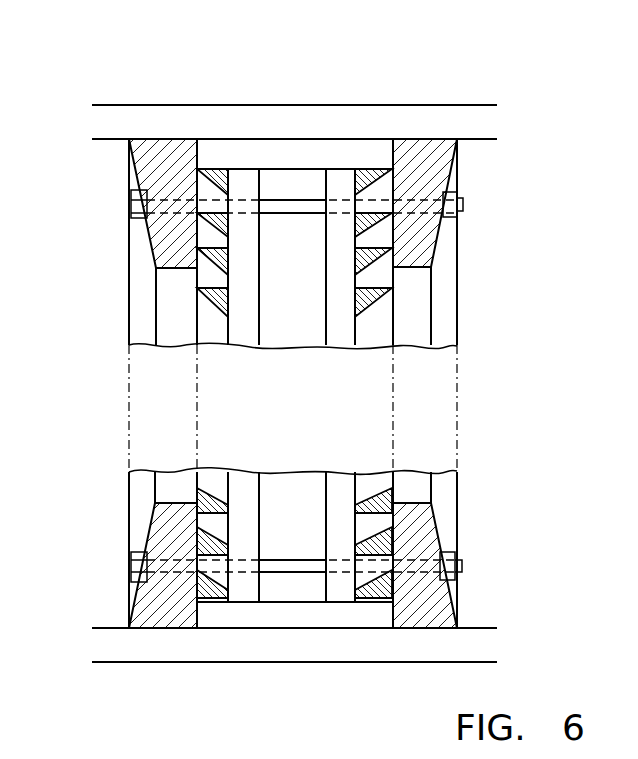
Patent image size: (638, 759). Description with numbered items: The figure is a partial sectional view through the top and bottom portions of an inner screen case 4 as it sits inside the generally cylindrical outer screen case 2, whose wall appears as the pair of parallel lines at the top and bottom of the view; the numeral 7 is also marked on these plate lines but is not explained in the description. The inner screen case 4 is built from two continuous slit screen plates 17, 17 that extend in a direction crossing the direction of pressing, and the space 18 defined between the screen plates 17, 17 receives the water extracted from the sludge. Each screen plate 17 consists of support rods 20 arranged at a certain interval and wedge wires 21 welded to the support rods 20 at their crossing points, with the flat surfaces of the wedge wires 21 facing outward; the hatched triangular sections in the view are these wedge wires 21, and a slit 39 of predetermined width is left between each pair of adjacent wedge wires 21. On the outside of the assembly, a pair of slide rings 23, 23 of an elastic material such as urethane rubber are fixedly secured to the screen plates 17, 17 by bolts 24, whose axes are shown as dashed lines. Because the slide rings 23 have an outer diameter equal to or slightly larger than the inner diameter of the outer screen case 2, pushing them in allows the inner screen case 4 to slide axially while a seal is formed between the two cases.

The outer screen case 2 is at (431, 103).
The inner screen case 4 is at (117, 282).
The plate 7 is at (375, 127).
The continuous slit screen plate 17 is at (307, 383).
The space 18 is at (295, 227).
The support rod 20 is at (343, 242).
The wedge wire 21 is at (372, 303).
The slide ring 23 is at (160, 232).
The bolt 24 is at (273, 200).
The slit 39 is at (192, 522).